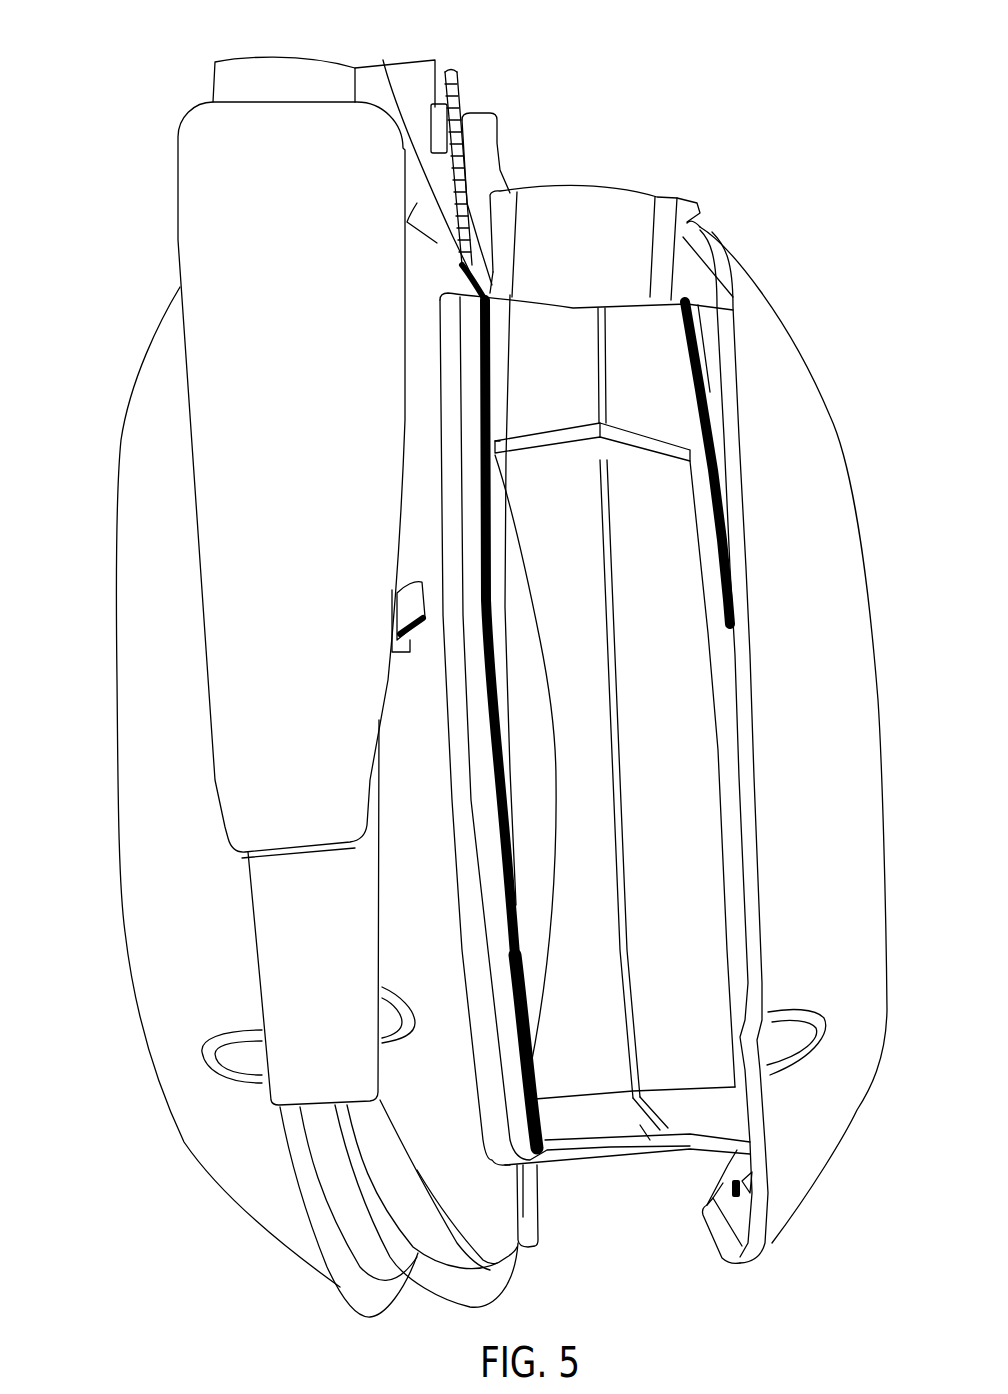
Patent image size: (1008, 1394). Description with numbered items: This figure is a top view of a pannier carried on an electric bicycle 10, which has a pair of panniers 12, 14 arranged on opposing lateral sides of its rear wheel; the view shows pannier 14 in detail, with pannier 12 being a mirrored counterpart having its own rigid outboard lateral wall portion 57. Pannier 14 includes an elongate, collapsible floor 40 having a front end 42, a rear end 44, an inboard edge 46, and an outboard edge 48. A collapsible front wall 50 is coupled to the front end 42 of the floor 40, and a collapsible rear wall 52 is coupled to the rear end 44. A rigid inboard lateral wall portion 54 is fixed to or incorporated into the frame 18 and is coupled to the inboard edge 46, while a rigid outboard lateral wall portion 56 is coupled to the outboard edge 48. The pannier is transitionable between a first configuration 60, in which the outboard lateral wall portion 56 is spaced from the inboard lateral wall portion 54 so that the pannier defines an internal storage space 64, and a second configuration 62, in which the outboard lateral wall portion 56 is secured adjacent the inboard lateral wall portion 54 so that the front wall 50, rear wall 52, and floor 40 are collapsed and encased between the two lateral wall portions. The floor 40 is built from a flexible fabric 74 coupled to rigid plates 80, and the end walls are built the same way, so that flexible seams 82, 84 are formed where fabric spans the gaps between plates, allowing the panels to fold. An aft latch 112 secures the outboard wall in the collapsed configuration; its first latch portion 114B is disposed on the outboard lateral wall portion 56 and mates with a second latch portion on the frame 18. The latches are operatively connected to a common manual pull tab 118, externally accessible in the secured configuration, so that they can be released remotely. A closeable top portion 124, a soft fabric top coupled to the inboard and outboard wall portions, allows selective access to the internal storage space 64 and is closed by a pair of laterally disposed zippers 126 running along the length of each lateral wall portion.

The electric bicycle 10 is at (262, 72).
The pannier 12 is at (101, 262).
The pannier 14 is at (783, 153).
The frame 18 is at (493, 1290).
The floor 40 is at (691, 774).
The front end 42 is at (647, 490).
The rear end 44 is at (683, 1050).
The inboard edge 46 is at (580, 748).
The outboard edge 48 is at (703, 817).
The front wall 50 is at (524, 397).
The rear wall 52 is at (549, 1137).
The inboard lateral wall portion 54 is at (530, 648).
The outboard lateral wall portion 56 is at (832, 492).
The outboard lateral wall portion 57 is at (140, 626).
The first configuration 60 is at (613, 104).
The second configuration 62 is at (89, 428).
The internal storage space 64 is at (712, 910).
The flexible fabric 74 is at (595, 729).
The rigid plates 80 is at (603, 380).
The flexible seam 82 is at (697, 1135).
The flexible seam 84 is at (625, 885).
The aft latch 112 is at (672, 1230).
The first latch portion 114B is at (745, 1190).
The manual pull tab 118 is at (408, 637).
The top portion 124 is at (608, 202).
The zippers 126 is at (697, 392).